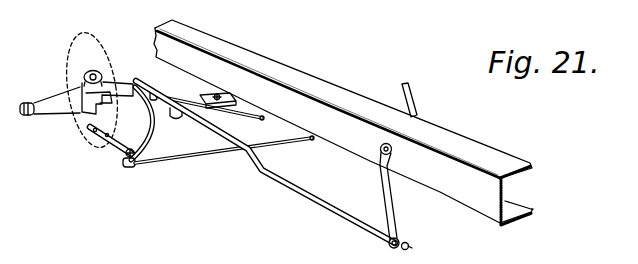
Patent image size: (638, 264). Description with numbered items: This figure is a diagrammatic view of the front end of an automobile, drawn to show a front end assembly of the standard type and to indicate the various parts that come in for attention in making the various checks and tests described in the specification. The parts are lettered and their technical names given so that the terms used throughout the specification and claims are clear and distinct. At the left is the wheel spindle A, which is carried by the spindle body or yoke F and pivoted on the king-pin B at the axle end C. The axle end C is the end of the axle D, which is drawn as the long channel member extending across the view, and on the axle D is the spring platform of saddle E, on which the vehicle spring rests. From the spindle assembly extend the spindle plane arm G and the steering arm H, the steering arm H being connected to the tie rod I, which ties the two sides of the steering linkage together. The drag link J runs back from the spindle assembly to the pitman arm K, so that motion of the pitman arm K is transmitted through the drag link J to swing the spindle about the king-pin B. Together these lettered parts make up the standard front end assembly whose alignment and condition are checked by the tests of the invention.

The wheel spindle A is at (47, 96).
The king-pin B is at (96, 75).
The axle end C is at (100, 140).
The axle D is at (193, 93).
The spring platform of saddle E is at (218, 95).
The spindle body or yoke F is at (88, 127).
The spindle plane arm G is at (118, 150).
The steering arm H is at (168, 158).
The tie rod I is at (223, 156).
The drag link J is at (308, 198).
The pitman arm K is at (398, 212).